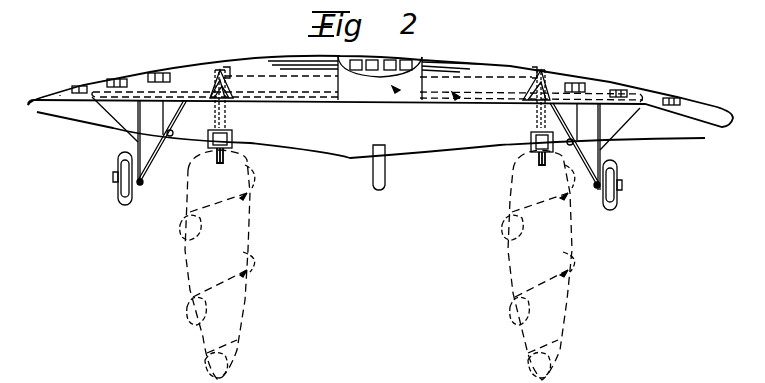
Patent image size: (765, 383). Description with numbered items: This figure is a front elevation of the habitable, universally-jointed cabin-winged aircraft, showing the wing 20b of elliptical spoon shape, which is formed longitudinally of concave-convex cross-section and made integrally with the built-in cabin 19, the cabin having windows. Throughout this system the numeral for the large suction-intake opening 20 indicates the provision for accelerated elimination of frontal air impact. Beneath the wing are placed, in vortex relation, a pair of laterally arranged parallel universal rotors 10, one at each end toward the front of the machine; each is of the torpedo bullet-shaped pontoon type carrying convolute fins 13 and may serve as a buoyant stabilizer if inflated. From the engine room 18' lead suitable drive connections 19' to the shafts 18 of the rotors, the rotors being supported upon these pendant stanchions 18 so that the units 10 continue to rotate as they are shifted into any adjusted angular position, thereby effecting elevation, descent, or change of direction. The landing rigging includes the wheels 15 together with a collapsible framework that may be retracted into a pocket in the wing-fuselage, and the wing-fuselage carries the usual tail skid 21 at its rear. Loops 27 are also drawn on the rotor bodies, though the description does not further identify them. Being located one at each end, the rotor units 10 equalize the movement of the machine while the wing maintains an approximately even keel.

The wing 20b is at (188, 67).
The cabin 19 is at (402, 67).
The drive connections 19' is at (467, 111).
The shaft 18 is at (380, 98).
The engine room 18' is at (416, 110).
The suction-intake opening 20 is at (233, 140).
The tail skid 21 is at (380, 178).
The wheels 15 is at (118, 192).
The universal rotor 10 is at (245, 218).
The convolute fins 13 is at (260, 267).
The loop 27 is at (515, 337).